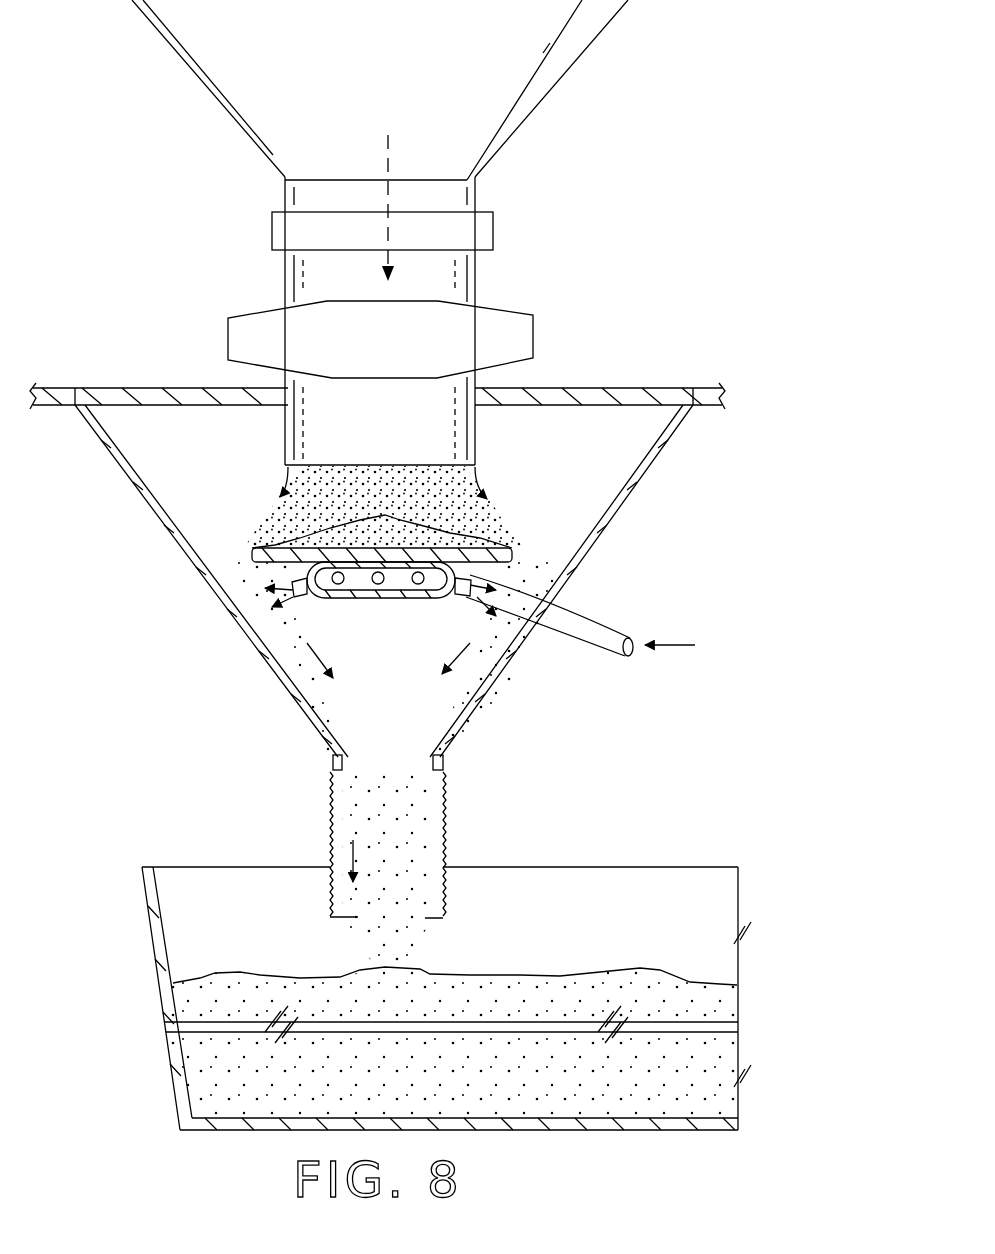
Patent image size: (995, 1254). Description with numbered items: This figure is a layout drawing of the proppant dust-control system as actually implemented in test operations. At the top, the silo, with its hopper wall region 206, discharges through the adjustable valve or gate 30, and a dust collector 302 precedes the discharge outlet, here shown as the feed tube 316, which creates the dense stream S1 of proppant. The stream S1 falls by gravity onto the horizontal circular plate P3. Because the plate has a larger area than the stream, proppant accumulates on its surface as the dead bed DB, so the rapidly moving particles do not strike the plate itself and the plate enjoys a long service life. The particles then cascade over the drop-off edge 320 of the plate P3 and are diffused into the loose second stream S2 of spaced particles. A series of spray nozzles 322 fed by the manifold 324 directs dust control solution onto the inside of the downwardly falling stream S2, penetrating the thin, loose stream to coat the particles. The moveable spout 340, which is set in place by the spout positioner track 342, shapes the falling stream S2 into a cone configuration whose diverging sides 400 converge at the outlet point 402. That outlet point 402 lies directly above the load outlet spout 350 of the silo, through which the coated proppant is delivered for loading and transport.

The upper hopper 206 is at (543, 100).
The outlet valve 30 is at (482, 229).
The dust collector 302 is at (507, 325).
The spout positioner track 342 is at (713, 390).
The feed tube 316 is at (477, 427).
The first proppant stream S1 is at (460, 481).
The dead bed DB is at (430, 536).
The moveable spout 340 is at (607, 527).
The drop-off edge 320 is at (262, 566).
The circular plate P3 is at (297, 583).
The manifold 324 is at (398, 598).
The spray nozzles 322 is at (303, 597).
The second proppant stream S2 is at (497, 660).
The diverging sides 400 is at (300, 680).
The outlet point 402 is at (397, 787).
The load outlet spout 350 is at (443, 847).